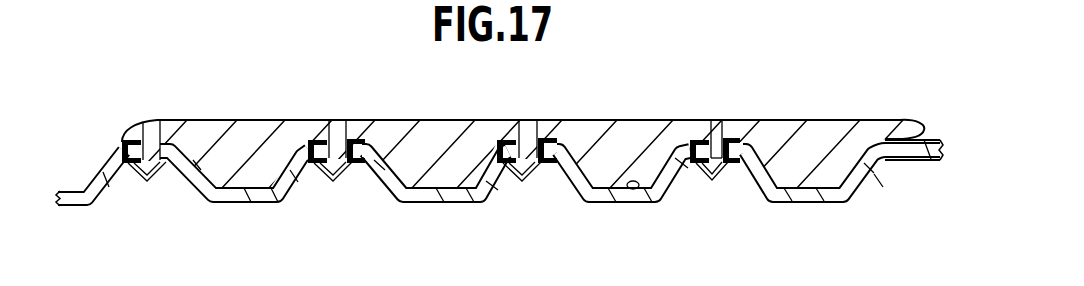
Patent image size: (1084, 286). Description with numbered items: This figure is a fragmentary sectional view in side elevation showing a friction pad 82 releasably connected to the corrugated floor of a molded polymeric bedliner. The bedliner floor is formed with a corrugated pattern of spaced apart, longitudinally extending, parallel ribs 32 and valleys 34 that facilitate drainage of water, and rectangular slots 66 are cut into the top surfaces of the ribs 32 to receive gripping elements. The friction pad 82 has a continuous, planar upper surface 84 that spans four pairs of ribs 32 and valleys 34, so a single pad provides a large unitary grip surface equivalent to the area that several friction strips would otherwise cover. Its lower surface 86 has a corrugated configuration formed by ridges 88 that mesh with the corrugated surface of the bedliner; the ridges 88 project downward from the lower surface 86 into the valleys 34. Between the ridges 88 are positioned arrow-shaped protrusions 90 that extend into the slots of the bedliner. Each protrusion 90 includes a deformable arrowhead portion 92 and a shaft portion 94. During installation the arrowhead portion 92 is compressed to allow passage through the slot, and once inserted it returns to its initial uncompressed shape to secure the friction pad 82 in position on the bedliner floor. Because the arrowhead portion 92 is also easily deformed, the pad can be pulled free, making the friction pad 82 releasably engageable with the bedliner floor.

The friction pad 82 is at (218, 96).
The upper surface 84 is at (448, 119).
The lower surface 86 is at (500, 188).
The ridge 88 is at (248, 184).
The arrow-shaped protrusion 90 is at (137, 186).
The arrowhead portion 92 is at (150, 171).
The shaft portion 94 is at (147, 128).
The rib 32 is at (118, 145).
The valley 34 is at (284, 193).
The rectangular slot 66 is at (157, 125).